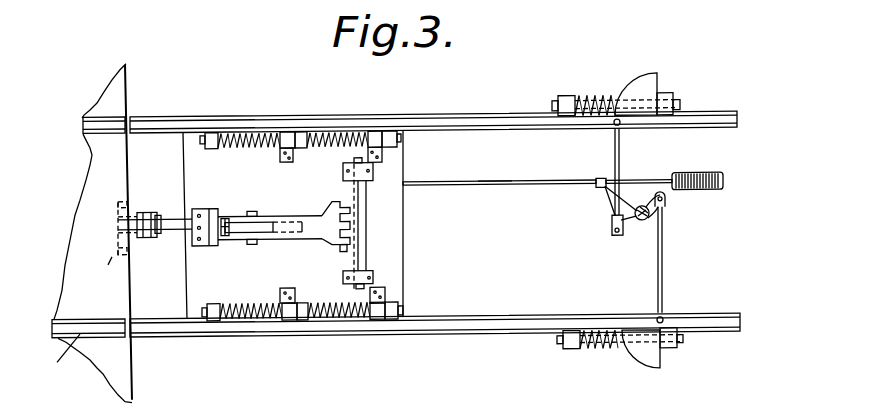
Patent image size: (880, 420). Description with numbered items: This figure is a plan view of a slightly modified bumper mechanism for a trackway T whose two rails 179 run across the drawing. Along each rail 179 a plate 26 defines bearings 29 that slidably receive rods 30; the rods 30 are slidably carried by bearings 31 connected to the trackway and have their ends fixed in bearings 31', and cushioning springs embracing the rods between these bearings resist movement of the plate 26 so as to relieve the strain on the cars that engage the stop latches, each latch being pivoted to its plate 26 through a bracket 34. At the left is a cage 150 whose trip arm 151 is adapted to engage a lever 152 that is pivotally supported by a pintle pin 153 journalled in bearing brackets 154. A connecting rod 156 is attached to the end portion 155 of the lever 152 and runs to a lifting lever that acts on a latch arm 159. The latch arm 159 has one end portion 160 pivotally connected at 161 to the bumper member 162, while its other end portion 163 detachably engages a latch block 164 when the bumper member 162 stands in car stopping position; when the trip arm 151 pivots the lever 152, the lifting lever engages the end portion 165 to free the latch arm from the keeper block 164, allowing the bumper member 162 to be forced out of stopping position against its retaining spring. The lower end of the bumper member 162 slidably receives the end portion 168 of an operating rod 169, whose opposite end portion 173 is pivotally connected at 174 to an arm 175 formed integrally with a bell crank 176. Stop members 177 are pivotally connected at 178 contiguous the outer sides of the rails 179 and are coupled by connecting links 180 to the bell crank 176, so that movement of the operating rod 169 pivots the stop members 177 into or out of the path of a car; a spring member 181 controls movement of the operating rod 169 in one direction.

The plate 26 is at (397, 166).
The bearing 29 is at (288, 133).
The rod 30 is at (250, 133).
The bearing 31 is at (353, 229).
The bearing 31' is at (300, 224).
The bracket 34 is at (374, 279).
The cage 150 is at (62, 357).
The trip arm 151 is at (102, 272).
The lever 152 is at (147, 240).
The pintle pin 153 is at (146, 213).
The bearing bracket 154 is at (157, 215).
The end portion of the lever 155 is at (210, 218).
The connecting rod 156 is at (178, 232).
The latch arm 159 is at (287, 216).
The end portion of the latch arm 160 is at (320, 227).
The pivotal connection 161 is at (342, 253).
The bumper member 162 is at (362, 251).
The end portion of the latch arm 163 is at (224, 241).
The latch block 164 is at (250, 211).
The end portion 165 is at (228, 218).
The end portion of the operating rod 168 is at (418, 181).
The operating rod 169 is at (495, 185).
The end portion of the operating rod 173 is at (578, 181).
The pivotal connection 174 is at (603, 190).
The arm 175 is at (631, 205).
The bell crank 176 is at (640, 228).
The stop member 177 is at (650, 80).
The pivotal connection 178 is at (572, 95).
The rail 179 is at (721, 114).
The connecting link 180 is at (620, 165).
The spring member 181 is at (703, 191).
The trackway T is at (725, 312).